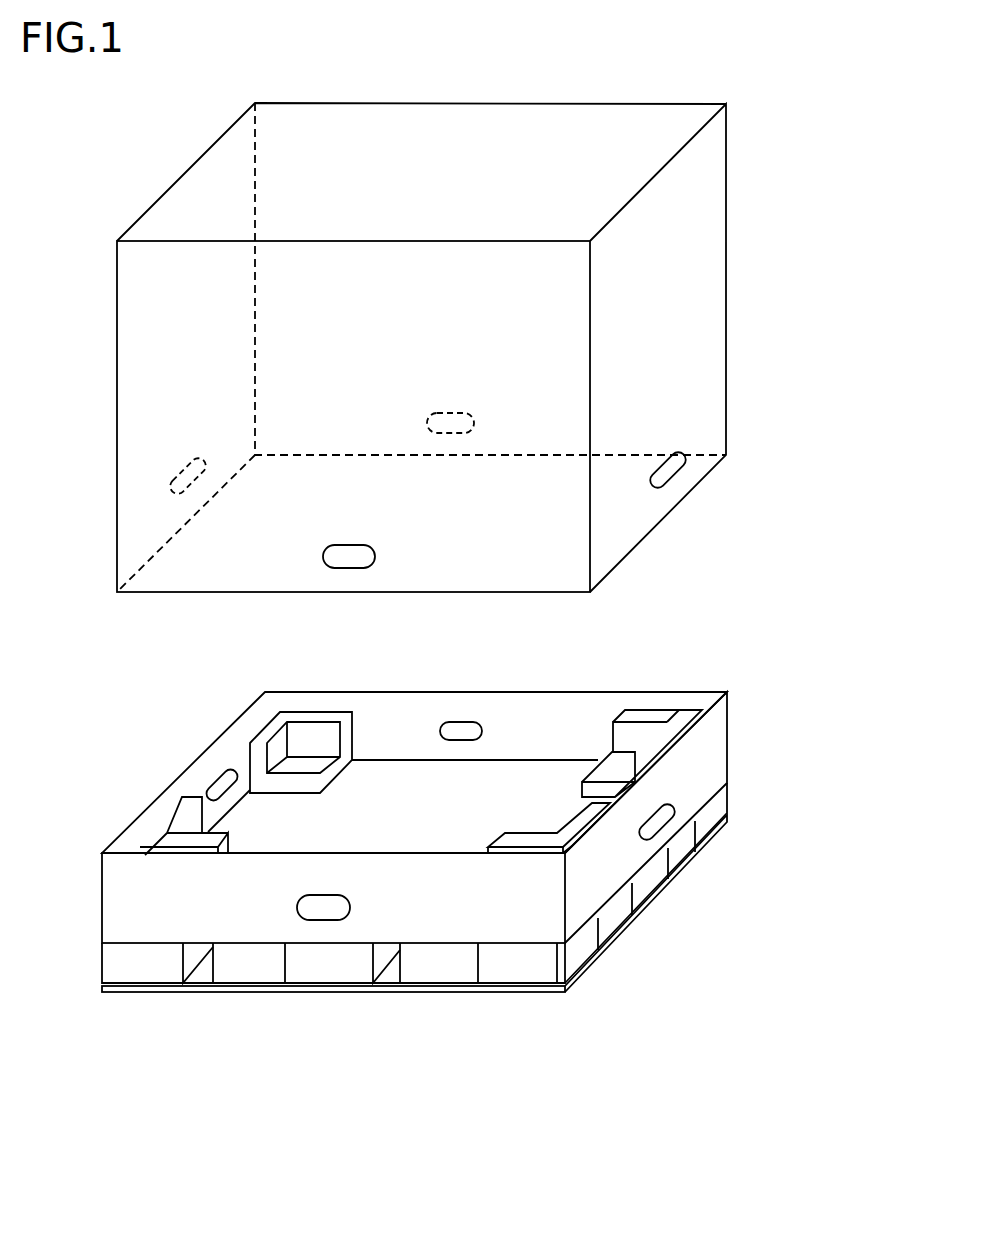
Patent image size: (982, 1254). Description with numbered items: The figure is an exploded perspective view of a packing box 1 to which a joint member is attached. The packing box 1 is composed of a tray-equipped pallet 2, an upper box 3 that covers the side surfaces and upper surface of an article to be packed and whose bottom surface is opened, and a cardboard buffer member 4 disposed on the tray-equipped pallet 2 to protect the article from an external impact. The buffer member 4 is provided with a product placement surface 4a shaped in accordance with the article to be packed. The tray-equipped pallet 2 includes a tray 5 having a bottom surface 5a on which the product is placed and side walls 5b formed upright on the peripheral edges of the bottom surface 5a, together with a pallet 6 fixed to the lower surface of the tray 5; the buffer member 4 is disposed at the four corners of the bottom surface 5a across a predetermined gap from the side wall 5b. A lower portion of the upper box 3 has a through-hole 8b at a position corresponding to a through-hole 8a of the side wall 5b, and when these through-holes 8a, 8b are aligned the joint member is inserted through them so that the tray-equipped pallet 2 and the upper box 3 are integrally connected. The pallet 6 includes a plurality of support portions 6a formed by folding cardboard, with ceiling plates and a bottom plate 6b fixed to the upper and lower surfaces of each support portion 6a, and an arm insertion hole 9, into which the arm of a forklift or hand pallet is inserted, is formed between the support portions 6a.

The packing box 1 is at (820, 577).
The tray-equipped pallet 2 is at (742, 743).
The upper box 3 is at (698, 392).
The buffer member 4 is at (274, 730).
The product placement surface 4a is at (312, 763).
The tray 5 is at (80, 858).
The bottom surface 5a is at (438, 798).
The side wall 5b is at (515, 692).
The pallet 6 is at (80, 945).
The support portion 6a is at (138, 966).
The bottom plate 6b is at (228, 986).
The through-hole 8a is at (660, 825).
The through-hole 8b is at (340, 569).
The arm insertion hole 9 is at (433, 968).